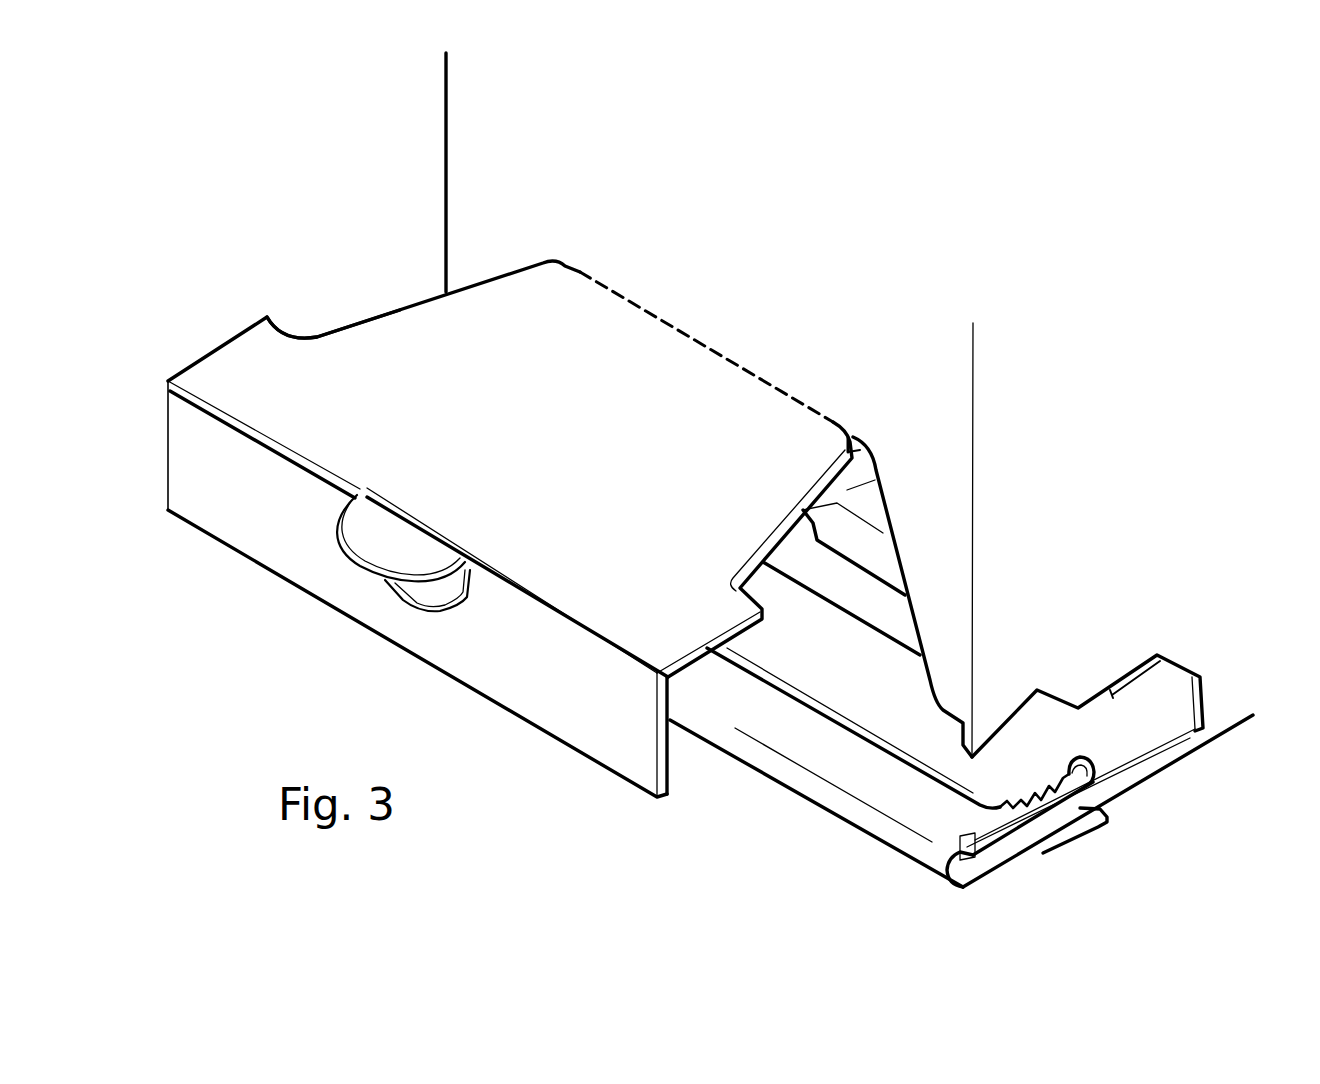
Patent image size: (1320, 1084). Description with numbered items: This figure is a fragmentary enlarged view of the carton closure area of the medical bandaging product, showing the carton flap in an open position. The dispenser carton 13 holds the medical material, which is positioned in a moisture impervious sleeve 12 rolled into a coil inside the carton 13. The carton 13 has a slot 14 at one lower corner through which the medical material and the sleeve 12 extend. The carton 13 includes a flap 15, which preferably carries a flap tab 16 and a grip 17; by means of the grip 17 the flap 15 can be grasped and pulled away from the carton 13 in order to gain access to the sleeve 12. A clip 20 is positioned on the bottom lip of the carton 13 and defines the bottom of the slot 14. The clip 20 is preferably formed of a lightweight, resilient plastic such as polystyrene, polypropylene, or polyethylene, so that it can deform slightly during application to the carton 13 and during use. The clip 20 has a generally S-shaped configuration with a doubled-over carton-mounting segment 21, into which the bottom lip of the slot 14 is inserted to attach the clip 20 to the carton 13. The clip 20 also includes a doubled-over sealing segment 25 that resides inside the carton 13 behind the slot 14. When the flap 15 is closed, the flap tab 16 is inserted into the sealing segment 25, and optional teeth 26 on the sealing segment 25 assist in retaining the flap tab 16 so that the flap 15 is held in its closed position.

The sleeve 12 is at (867, 497).
The dispenser carton 13 is at (475, 120).
The slot 14 is at (987, 743).
The flap 15 is at (398, 337).
The flap tab 16 is at (255, 530).
The grip 17 is at (380, 555).
The clip 20 is at (878, 865).
The carton-mounting segment 21 is at (960, 882).
The sealing segment 25 is at (1080, 732).
The teeth 26 is at (1047, 740).